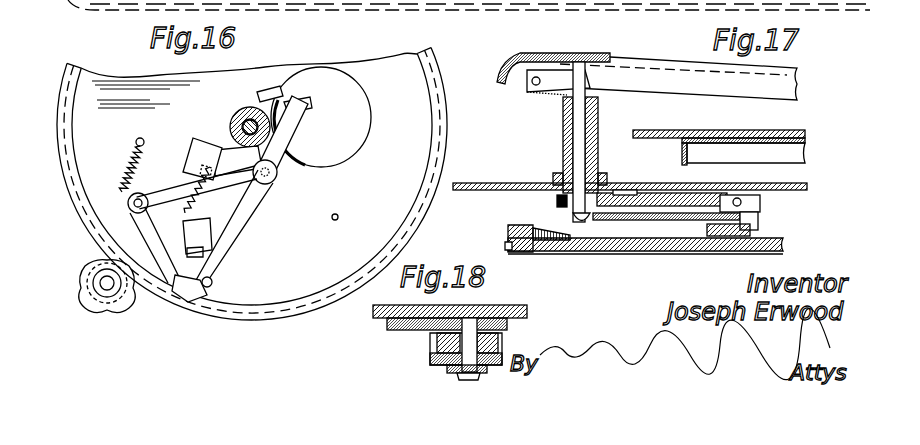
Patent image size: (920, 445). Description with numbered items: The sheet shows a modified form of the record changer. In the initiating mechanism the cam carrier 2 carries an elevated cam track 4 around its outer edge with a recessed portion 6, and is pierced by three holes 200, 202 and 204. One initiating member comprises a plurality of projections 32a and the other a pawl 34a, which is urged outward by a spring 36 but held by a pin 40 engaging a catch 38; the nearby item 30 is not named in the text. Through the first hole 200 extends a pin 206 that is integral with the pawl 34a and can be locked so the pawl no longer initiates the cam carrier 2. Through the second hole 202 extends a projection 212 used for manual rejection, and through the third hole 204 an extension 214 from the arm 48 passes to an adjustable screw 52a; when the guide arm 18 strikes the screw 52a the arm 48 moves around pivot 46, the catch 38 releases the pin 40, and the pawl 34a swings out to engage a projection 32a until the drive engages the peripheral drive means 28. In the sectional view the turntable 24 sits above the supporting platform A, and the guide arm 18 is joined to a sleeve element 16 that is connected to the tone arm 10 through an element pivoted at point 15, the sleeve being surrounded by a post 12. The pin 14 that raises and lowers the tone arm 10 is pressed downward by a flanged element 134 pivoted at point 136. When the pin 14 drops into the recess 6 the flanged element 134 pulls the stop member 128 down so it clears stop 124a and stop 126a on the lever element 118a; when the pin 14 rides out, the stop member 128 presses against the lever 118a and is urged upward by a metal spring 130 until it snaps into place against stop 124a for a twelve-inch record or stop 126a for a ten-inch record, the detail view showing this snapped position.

In FIG. 16, the cam carrier 2 is at (252, 184).
In FIG. 17, the cam carrier 2 is at (783, 243).
In FIG. 17, the elevated cam track 4 is at (512, 232).
In FIG. 17, the recessed portion 6 is at (545, 232).
In FIG. 17, the tone arm 10 is at (666, 67).
In FIG. 17, the post 12 is at (600, 124).
In FIG. 17, the pin 14 is at (563, 153).
In FIG. 17, the pivot point 15 is at (533, 86).
In FIG. 17, the sleeve element 16 is at (563, 142).
In FIG. 17, the guide arm 18 is at (757, 197).
In FIG. 18, the guide arm 18 is at (490, 335).
In FIG. 17, the turntable 24 is at (682, 146).
In FIG. 17, the peripheral drive means 28 is at (508, 246).
In FIG. 16, the knob assembly 30 is at (96, 254).
In FIG. 16, the projections 32a is at (130, 304).
In FIG. 16, the pawl 34a is at (183, 293).
In FIG. 16, the spring 36 is at (127, 152).
In FIG. 16, the catch 38 is at (227, 310).
In FIG. 16, the pin 40 is at (228, 275).
In FIG. 16, the pivot 46 is at (278, 183).
In FIG. 16, the arm 48 is at (240, 231).
In FIG. 16, the adjustable screw 52a is at (263, 93).
In FIG. 17, the lever element 118a is at (637, 185).
In FIG. 18, the lever element 118a is at (420, 348).
In FIG. 17, the stop 124a is at (703, 138).
In FIG. 17, the stop 126a is at (707, 185).
In FIG. 17, the stop member 128 is at (746, 153).
In FIG. 18, the stop member 128 is at (470, 300).
In FIG. 17, the metal spring 130 is at (637, 219).
In FIG. 18, the metal spring 130 is at (445, 364).
In FIG. 17, the flanged element 134 is at (703, 215).
In FIG. 18, the flanged element 134 is at (503, 340).
In FIG. 17, the pivot 136 is at (745, 204).
In FIG. 16, the hole 200 is at (177, 227).
In FIG. 16, the hole 202 is at (202, 151).
In FIG. 16, the hole 204 is at (371, 105).
In FIG. 16, the pin 206 is at (198, 252).
In FIG. 16, the projection 212 is at (212, 157).
In FIG. 16, the extension 214 is at (297, 100).
In FIG. 17, the supporting platform A is at (805, 181).